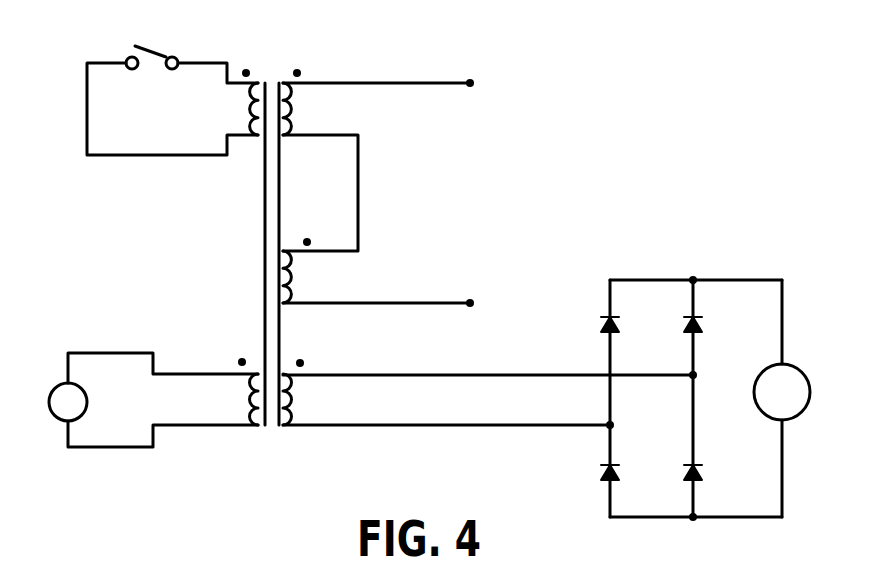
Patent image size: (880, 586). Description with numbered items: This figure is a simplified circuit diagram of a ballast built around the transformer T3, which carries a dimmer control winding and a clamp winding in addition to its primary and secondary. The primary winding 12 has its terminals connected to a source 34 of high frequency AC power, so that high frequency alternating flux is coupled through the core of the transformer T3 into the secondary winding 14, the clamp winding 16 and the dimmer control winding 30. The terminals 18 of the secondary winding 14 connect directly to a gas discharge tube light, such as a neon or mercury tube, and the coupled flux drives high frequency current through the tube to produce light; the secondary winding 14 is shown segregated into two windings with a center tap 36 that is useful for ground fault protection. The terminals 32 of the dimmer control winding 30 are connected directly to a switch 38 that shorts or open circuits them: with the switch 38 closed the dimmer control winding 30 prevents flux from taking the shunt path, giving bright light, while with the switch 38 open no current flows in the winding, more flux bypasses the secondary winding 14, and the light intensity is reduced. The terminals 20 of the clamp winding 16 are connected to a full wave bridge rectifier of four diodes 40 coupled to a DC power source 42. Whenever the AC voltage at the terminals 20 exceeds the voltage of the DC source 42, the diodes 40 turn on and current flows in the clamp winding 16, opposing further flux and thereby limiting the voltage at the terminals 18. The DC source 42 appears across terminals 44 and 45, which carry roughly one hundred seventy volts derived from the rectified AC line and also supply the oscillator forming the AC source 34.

The primary winding 12 is at (250, 413).
The secondary winding 14 is at (306, 137).
The clamp winding 16 is at (296, 418).
The terminals of the secondary winding 18 is at (473, 83).
The terminals of the clamp winding 20 is at (443, 375).
The dimmer control winding 30 is at (249, 117).
The terminals of the dimmer control winding 32 is at (102, 156).
The source of high frequency AC power 34 is at (50, 402).
The center tap 36 is at (359, 210).
The switch 38 is at (167, 54).
The diodes 40 is at (686, 468).
The DC power source 42 is at (808, 398).
The DC voltage terminal 44 is at (694, 518).
The DC voltage terminal 45 is at (693, 279).
The transformer T3 is at (273, 83).